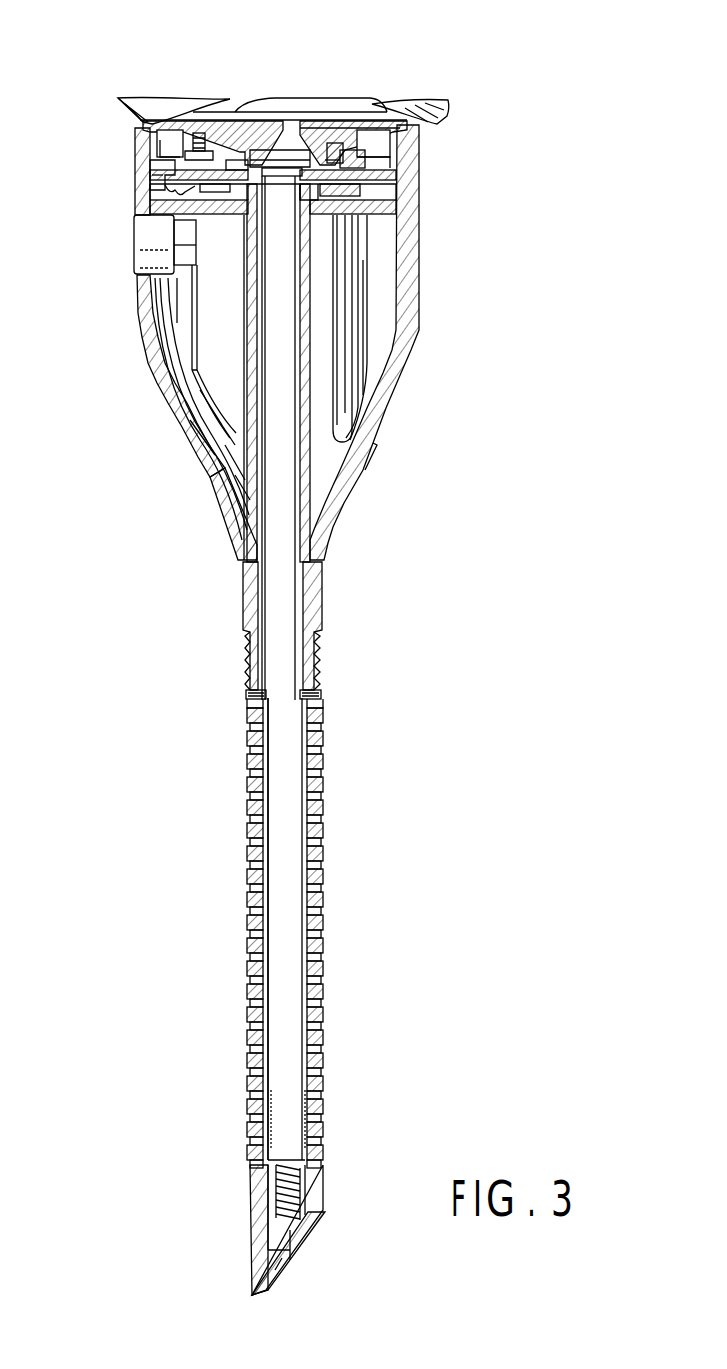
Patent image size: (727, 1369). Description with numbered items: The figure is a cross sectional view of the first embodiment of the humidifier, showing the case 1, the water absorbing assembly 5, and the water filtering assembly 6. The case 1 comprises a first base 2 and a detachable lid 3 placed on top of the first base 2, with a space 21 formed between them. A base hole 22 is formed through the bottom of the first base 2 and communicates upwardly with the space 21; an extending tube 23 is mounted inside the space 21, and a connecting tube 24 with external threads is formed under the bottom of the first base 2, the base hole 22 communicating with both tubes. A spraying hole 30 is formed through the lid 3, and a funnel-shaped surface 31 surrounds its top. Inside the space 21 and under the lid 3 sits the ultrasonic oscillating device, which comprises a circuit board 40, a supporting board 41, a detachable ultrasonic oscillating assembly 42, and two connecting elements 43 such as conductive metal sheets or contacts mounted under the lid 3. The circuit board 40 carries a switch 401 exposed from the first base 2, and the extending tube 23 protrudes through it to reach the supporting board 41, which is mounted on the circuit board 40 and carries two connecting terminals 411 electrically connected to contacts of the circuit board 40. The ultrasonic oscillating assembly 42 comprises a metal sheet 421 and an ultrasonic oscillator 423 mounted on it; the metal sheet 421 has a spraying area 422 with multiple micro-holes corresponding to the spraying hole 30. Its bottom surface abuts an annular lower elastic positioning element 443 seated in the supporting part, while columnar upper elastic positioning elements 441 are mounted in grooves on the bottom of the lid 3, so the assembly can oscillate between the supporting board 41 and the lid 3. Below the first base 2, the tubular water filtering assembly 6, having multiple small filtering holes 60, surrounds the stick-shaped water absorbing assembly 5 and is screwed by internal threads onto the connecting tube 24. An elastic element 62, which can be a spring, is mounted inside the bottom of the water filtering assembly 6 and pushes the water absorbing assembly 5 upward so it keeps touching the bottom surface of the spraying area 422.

The case 1 is at (186, 570).
The first base 2 is at (367, 483).
The space 21 is at (378, 293).
The base hole 22 is at (300, 612).
The extending tube 23 is at (253, 394).
The connecting tube 24 is at (315, 597).
The lid 3 is at (340, 98).
The spraying hole 30 is at (263, 170).
The funnel-shaped surface 31 is at (350, 130).
The circuit board 40 is at (377, 207).
The switch 401 is at (147, 236).
The supporting board 41 is at (380, 172).
The connecting terminals 411 is at (167, 177).
The ultrasonic oscillating assembly 42 is at (313, 158).
The metal sheet 421 is at (197, 187).
The spraying area 422 is at (278, 166).
The ultrasonic oscillator 423 is at (237, 178).
The connecting elements 43 is at (183, 160).
The columnar upper elastic positioning elements 441 is at (360, 150).
The annular lower elastic positioning element 443 is at (360, 188).
The water absorbing assembly 5 is at (296, 922).
The water filtering assembly 6 is at (332, 828).
The filtering holes 60 is at (312, 780).
The elastic element 62 is at (300, 1197).